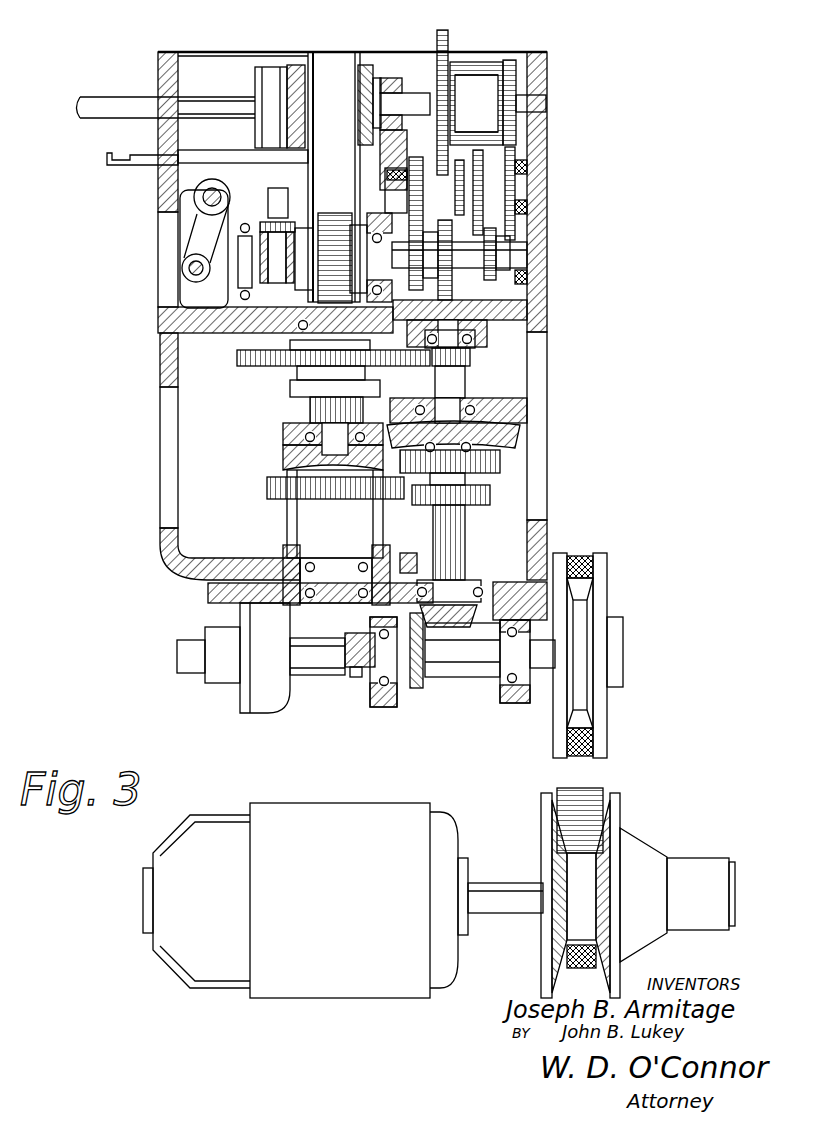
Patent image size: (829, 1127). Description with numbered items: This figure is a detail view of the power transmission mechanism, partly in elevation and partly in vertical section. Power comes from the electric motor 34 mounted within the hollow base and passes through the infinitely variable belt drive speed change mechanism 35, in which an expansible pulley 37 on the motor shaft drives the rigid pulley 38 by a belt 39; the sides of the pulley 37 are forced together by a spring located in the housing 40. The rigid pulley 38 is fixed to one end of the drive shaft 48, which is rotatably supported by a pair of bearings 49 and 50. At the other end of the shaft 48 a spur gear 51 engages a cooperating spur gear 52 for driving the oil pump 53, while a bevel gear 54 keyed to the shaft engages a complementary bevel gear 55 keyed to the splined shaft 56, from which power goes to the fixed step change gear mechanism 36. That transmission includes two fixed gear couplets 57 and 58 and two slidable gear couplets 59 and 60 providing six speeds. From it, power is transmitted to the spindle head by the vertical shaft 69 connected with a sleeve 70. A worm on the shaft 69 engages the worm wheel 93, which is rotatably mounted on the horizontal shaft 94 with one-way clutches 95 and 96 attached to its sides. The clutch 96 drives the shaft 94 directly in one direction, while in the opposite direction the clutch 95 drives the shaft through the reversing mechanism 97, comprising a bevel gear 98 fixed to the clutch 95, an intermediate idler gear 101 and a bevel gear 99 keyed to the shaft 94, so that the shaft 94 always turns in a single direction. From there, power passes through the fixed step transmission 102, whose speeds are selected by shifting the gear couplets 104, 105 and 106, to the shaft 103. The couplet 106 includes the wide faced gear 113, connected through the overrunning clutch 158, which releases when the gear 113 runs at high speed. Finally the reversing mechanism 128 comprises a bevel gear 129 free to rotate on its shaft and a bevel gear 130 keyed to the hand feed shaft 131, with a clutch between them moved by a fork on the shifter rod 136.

The reversing mechanism 128 is at (283, 46).
The fixed step transmission 102 is at (556, 177).
The hand feed shaft 131 is at (107, 100).
The bevel gear 130 is at (262, 64).
The sleeve 70 is at (318, 58).
The bevel gear 129 is at (368, 62).
The shaft 103 is at (412, 98).
The gear couplet 106 is at (448, 64).
The wide faced gear 113 is at (478, 62).
The overrunning clutch 158 is at (520, 70).
The shifter rod 136 is at (113, 166).
The reversing mechanism 97 is at (267, 190).
The bevel gear 99 is at (258, 272).
The intermediate idler gear 101 is at (242, 280).
The bevel gear 98 is at (298, 292).
The worm wheel 93 is at (340, 212).
The one-way clutch 95 is at (310, 325).
The one-way clutch 96 is at (360, 276).
The horizontal shaft 94 is at (398, 268).
The gear couplet 104 is at (437, 288).
The gear couplet 105 is at (492, 283).
The slidable gear couplet 59 is at (296, 373).
The fixed gear couplet 58 is at (455, 382).
The vertical shaft 69 is at (306, 408).
The fixed gear couplet 57 is at (290, 465).
The fixed step change gear mechanism 36 is at (508, 455).
The slidable gear couplet 60 is at (472, 476).
The splined shaft 56 is at (452, 524).
The oil pump 53 is at (213, 676).
The spur gear 51 is at (348, 648).
The spur gear 52 is at (352, 678).
The bearing 49 is at (385, 706).
The bevel gear 54 is at (417, 690).
The bevel gear 55 is at (462, 628).
The drive shaft 48 is at (482, 690).
The bearing 50 is at (514, 703).
The rigid pulley 38 is at (604, 645).
The belt 39 is at (590, 556).
The infinitely variable belt drive speed change mechanism 35 is at (628, 728).
The electric motor 34 is at (285, 822).
The expansible pulley 37 is at (620, 800).
The housing 40 is at (705, 860).